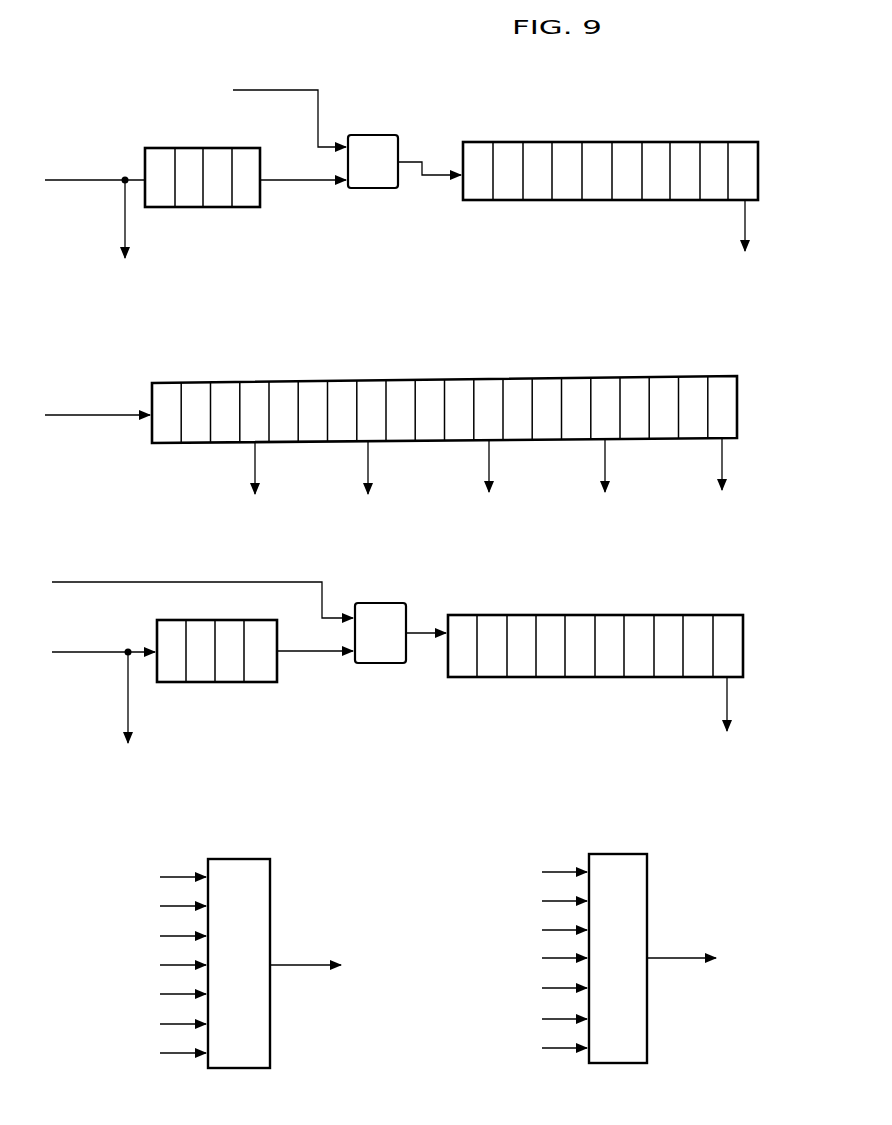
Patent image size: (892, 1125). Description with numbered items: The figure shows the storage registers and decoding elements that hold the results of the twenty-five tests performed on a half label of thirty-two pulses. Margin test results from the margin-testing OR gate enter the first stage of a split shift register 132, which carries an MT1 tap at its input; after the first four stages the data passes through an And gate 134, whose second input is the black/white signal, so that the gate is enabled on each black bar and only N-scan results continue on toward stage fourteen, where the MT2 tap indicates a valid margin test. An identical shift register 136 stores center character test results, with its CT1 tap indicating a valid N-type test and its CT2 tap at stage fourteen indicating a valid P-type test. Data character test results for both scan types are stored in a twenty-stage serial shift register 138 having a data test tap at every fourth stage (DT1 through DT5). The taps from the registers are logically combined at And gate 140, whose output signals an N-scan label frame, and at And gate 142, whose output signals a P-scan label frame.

The split shift register 132 is at (404, 185).
The And gate 134 is at (381, 143).
The shift register 136 is at (745, 678).
The serial shift register 138 is at (737, 362).
The And gate 140 is at (270, 895).
The And gate 142 is at (647, 893).